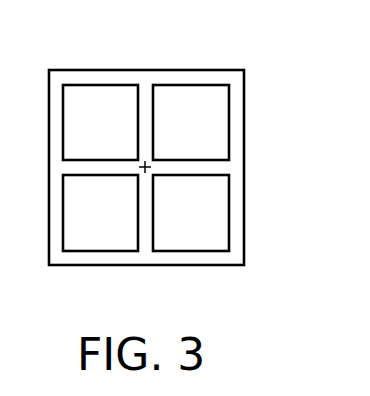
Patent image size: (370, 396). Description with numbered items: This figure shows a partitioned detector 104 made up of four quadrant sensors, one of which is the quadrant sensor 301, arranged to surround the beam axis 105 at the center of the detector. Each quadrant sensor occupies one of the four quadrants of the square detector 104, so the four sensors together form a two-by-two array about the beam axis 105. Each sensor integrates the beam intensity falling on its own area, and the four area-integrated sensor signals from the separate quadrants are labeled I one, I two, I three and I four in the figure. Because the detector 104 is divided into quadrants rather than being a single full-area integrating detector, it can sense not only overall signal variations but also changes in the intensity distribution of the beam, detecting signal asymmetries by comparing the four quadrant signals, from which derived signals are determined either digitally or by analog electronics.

The detector 104 is at (172, 70).
The quadrant sensor 301 is at (208, 85).
The beam axis 105 is at (147, 163).